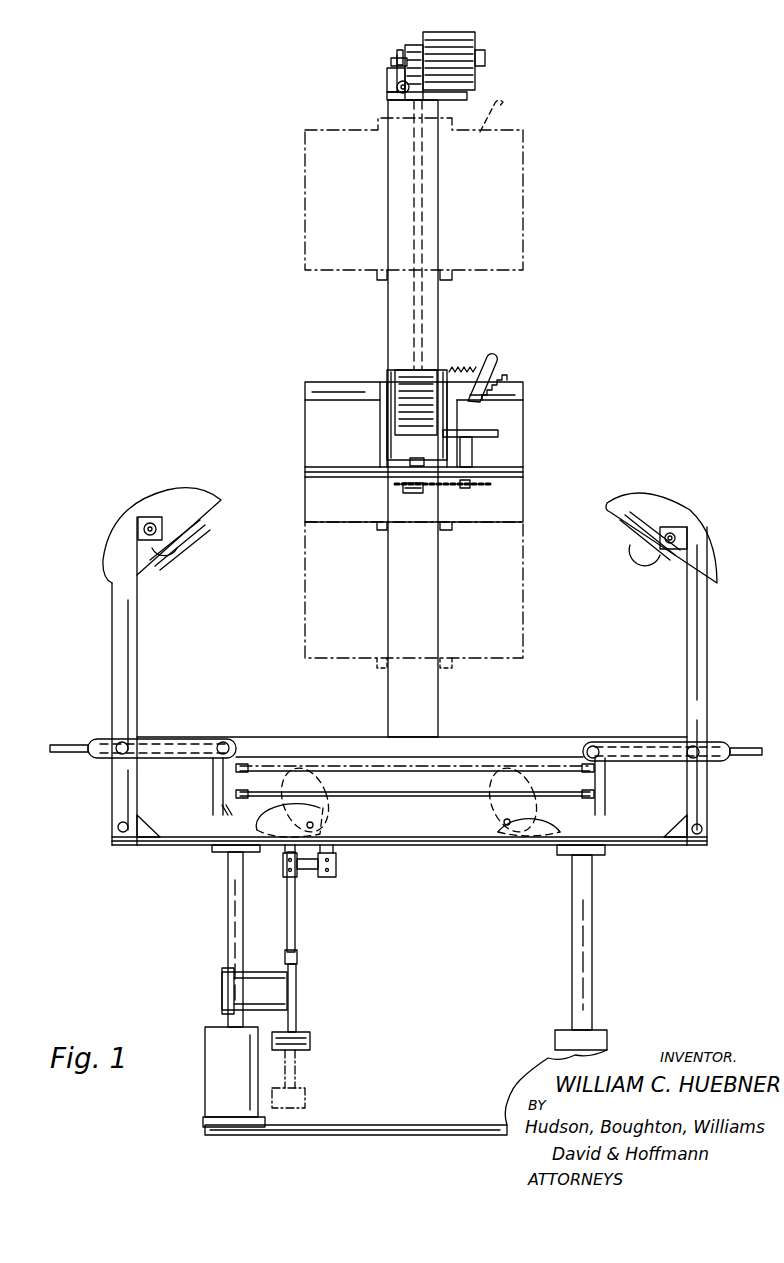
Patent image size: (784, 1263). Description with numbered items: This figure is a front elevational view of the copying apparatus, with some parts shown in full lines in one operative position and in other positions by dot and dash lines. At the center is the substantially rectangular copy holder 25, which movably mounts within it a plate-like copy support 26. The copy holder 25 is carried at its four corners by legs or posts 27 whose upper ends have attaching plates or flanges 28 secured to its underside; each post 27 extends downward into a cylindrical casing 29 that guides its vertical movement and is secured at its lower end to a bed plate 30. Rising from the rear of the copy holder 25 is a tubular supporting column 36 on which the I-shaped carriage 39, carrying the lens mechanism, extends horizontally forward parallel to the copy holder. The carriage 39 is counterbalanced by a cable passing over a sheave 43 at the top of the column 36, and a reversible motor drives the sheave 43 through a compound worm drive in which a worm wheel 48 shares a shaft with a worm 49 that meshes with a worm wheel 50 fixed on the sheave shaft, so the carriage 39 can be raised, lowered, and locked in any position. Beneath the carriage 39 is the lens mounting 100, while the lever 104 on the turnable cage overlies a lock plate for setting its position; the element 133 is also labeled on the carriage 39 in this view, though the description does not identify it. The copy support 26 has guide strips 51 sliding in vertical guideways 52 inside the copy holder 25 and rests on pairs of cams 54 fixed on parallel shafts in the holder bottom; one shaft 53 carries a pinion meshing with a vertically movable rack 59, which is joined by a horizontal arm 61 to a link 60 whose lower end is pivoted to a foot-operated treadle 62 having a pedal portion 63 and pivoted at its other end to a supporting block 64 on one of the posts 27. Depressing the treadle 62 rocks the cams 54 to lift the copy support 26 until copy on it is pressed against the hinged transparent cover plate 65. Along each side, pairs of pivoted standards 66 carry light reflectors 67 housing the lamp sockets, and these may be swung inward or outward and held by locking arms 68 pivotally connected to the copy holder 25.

The copy holder 25 is at (600, 832).
The copy support 26 is at (400, 805).
The legs or posts 27 is at (230, 942).
The attaching plates or flanges 28 is at (603, 858).
The cylindrical casing 29 is at (234, 1077).
The bed plate 30 is at (360, 1125).
The supporting column 36 is at (440, 330).
The carriage 39 is at (540, 420).
The sheave 43 is at (418, 42).
The worm wheel 48 is at (389, 78).
The worm 49 is at (397, 92).
The worm wheel 50 is at (400, 50).
The guide strips 51 is at (225, 825).
The vertical guideways 52 is at (225, 785).
The shaft 53 is at (314, 826).
The cams 54 is at (322, 785).
The rack 59 is at (336, 858).
The link 60 is at (295, 918).
The horizontal arm 61 is at (308, 870).
The foot-operated lever or treadle 62 is at (298, 1018).
The pedal portion 63 is at (312, 1044).
The supporting block 64 is at (222, 1000).
The hinged transparent cover plate 65 is at (500, 740).
The standards 66 is at (137, 675).
The light reflectors 67 is at (190, 485).
The locking arms 68 is at (170, 740).
The lens mounting 100 is at (413, 494).
The lever 104 is at (497, 360).
The slide housing 133 is at (390, 372).